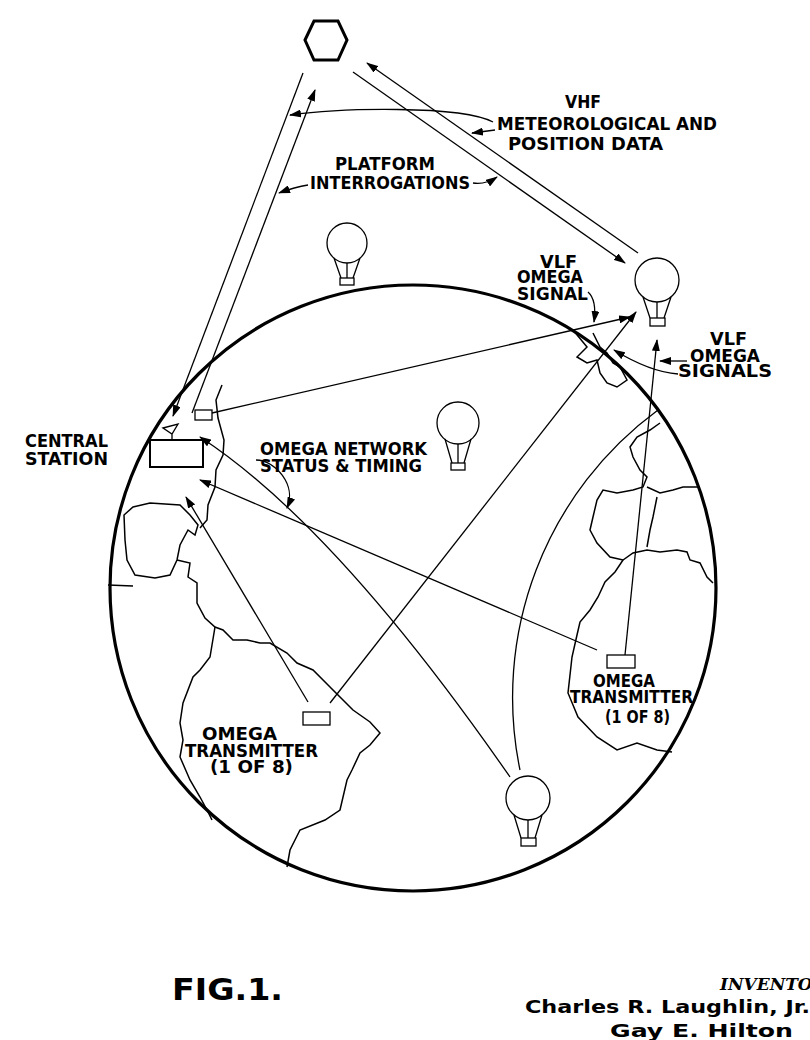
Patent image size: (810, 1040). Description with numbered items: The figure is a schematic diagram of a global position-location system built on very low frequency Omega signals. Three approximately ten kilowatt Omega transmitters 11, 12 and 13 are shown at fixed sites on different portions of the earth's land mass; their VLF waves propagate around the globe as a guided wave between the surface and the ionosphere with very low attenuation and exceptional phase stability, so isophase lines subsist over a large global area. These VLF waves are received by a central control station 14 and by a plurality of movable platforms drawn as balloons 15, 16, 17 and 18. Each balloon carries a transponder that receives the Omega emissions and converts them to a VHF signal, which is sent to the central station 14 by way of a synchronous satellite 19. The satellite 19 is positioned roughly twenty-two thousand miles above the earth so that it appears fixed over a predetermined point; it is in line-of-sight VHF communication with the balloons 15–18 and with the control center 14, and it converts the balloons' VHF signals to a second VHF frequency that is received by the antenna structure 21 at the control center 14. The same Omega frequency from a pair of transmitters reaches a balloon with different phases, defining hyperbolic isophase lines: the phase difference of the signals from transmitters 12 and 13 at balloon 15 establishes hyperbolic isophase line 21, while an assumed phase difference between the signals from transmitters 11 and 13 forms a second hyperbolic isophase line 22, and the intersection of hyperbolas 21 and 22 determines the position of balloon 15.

The Omega transmitter 11 is at (412, 368).
The Omega transmitter 12 is at (325, 722).
The Omega transmitter 13 is at (628, 660).
The central control station 14 is at (170, 460).
The balloon 15 is at (540, 798).
The balloon 16 is at (466, 424).
The balloon 17 is at (663, 270).
The balloon 18 is at (357, 248).
The synchronous satellite 19 is at (345, 28).
The antenna structure 21 is at (168, 420).
The hyperbolic isophase line 22 is at (414, 643).